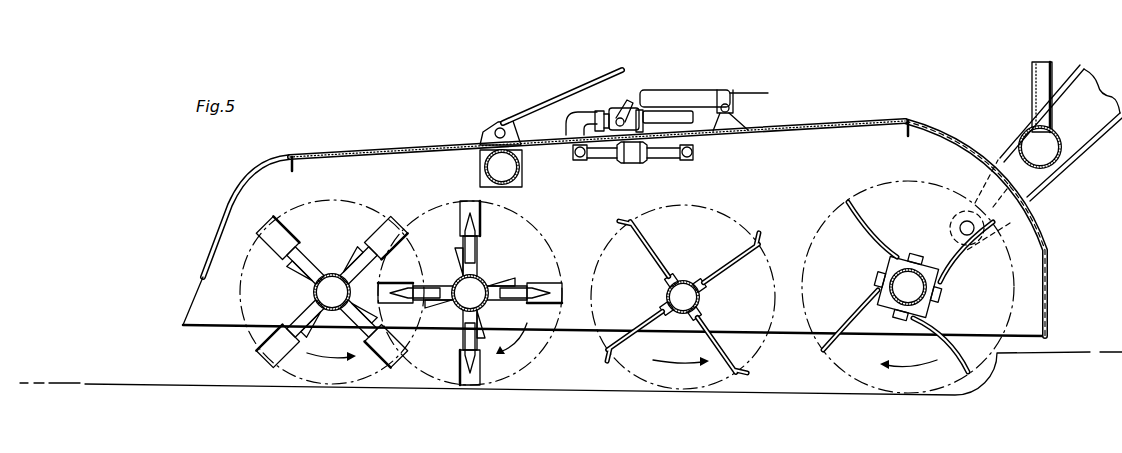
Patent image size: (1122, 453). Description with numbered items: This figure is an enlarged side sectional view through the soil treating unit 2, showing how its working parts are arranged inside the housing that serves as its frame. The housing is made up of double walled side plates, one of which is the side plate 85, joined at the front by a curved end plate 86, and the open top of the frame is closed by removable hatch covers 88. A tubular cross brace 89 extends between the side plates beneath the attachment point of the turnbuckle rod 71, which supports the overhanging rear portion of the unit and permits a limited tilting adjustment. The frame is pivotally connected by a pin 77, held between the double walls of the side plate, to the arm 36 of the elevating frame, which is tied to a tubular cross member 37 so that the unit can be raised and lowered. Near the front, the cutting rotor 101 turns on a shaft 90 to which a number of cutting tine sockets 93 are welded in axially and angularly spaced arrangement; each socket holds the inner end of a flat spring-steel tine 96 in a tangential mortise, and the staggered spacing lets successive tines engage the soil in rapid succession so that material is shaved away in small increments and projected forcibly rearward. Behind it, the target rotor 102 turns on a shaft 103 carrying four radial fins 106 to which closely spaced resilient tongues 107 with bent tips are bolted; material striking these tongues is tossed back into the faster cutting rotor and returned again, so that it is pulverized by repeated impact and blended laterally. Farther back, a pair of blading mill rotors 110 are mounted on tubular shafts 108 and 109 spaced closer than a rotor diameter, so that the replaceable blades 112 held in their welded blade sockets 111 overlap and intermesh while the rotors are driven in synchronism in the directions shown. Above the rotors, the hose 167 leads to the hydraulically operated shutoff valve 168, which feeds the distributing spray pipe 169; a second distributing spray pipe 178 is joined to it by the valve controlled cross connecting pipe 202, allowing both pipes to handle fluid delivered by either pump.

The soil treating unit 2 is at (236, 174).
The arm 36 is at (1008, 140).
The tubular cross member 37 is at (1068, 148).
The turnbuckle rod 71 is at (542, 104).
The pin 77 is at (958, 223).
The side plate 85 is at (194, 296).
The curved end plate 86 is at (1048, 258).
The hatch cover 88 is at (383, 128).
The tubular cross brace 89 is at (481, 170).
The shaft 90 is at (880, 279).
The cutting tine socket 93 is at (928, 256).
The tine 96 is at (858, 222).
The cutting rotor 101 is at (893, 179).
The target rotor 102 is at (763, 233).
The shaft 103 is at (667, 287).
The fin 106 is at (681, 271).
The tongue 107 is at (652, 242).
The tubular shaft 108 is at (462, 278).
The tubular shaft 109 is at (314, 284).
The blading mill rotor 110 is at (267, 212).
The blade socket 111 is at (346, 266).
The blade 112 is at (377, 232).
The hose 167 is at (675, 110).
The shutoff valve 168 is at (618, 100).
The distributing spray pipe 169 is at (576, 157).
The distributing spray pipe 178 is at (690, 160).
The cross connecting pipe 202 is at (628, 163).